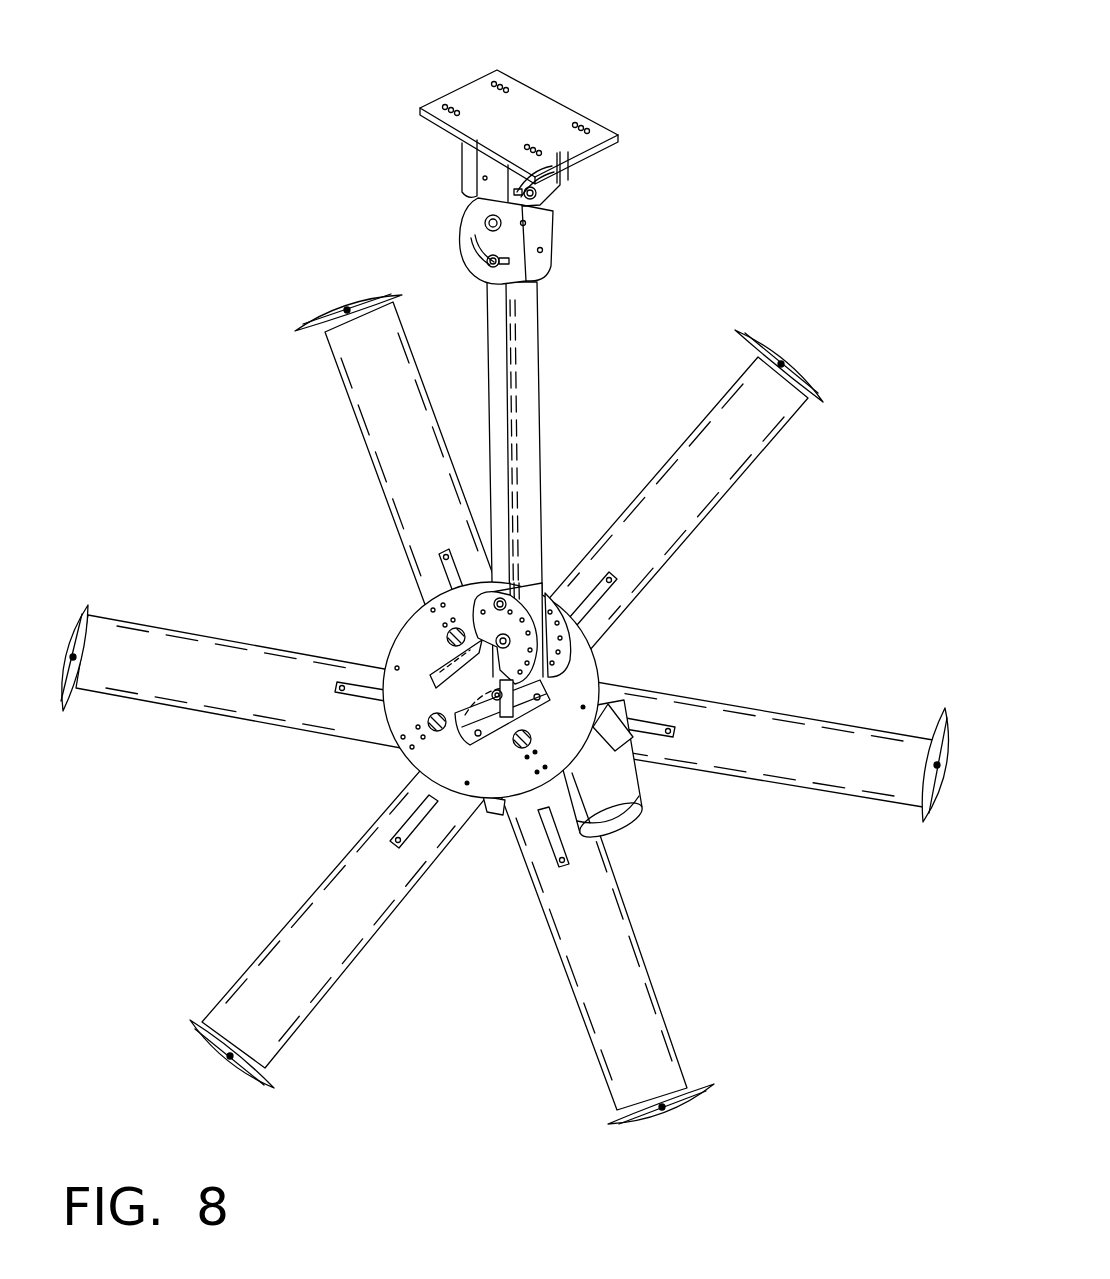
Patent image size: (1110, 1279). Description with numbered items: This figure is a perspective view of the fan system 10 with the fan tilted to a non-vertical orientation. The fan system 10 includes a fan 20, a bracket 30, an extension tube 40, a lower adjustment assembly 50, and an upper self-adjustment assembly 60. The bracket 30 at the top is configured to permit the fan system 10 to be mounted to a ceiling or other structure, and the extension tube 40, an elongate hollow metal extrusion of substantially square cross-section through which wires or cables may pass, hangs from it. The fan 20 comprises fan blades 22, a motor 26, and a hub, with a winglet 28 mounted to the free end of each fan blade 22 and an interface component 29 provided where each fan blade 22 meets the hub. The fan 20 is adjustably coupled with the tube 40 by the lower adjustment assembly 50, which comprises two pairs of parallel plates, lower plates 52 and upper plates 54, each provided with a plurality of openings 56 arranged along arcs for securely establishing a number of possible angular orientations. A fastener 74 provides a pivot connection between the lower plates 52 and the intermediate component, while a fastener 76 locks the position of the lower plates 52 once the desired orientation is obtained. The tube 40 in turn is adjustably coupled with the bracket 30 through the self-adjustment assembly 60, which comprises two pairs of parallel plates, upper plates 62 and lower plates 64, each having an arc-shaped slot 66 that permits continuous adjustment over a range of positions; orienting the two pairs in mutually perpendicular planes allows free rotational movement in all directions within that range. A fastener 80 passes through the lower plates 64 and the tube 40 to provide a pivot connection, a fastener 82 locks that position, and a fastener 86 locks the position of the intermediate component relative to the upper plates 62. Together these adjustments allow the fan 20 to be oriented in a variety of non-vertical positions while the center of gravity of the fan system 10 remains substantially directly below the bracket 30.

The fan system 10 is at (770, 42).
The fan 20 is at (420, 1135).
The fan blades 22 is at (328, 960).
The motor 26 is at (641, 820).
The winglet 28 is at (238, 1060).
The interface component 29 is at (500, 814).
The bracket 30 is at (462, 90).
The extension tube 40 is at (526, 368).
The lower adjustment assembly 50 is at (358, 603).
The lower plates 52 is at (440, 745).
The upper plates 54 is at (567, 655).
The openings 56 is at (556, 667).
The upper self-adjustment assembly 60 is at (410, 188).
The upper plates 62 is at (566, 165).
The lower plates 64 is at (549, 236).
The arc-shaped slot 66 is at (553, 181).
The fastener 74 is at (505, 713).
The fastener 76 is at (528, 718).
The fastener 80 is at (486, 222).
The fastener 82 is at (480, 264).
The fastener 86 is at (546, 194).